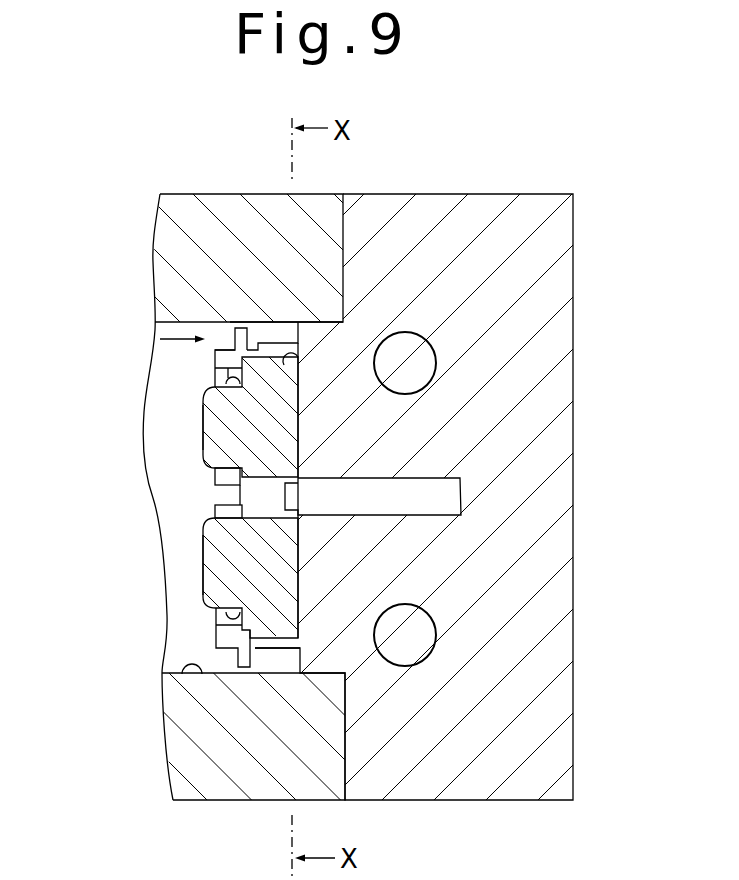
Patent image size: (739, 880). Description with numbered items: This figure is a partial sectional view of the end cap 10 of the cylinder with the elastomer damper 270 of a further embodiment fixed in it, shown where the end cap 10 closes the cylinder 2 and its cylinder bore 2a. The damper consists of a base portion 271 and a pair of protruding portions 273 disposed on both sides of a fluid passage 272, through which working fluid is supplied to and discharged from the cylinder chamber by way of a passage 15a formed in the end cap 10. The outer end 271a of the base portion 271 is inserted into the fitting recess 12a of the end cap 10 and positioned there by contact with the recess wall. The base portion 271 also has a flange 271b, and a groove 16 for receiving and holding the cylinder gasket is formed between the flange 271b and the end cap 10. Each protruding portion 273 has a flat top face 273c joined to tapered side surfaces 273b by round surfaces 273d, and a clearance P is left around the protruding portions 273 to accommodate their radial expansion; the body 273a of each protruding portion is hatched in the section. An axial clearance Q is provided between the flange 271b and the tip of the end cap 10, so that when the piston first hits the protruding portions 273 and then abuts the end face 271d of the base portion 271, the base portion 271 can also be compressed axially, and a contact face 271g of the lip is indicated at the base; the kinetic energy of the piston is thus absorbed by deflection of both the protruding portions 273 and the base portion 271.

The housing 2 is at (160, 266).
The cylinder bore 2a is at (178, 702).
The end cap 10 is at (548, 336).
The fitting recess 12a is at (296, 356).
The passage 15a is at (437, 513).
The groove 16 is at (262, 318).
The elastomer damper 270 is at (165, 339).
The base portion 271 is at (304, 368).
The outer end 271a is at (283, 443).
The flange 271b is at (242, 328).
The end face 271d is at (213, 637).
The seal contact face 271g is at (227, 353).
The fluid passage 272 is at (250, 493).
The protruding portions 273 is at (192, 420).
The back-up ring body 273a is at (253, 590).
The tapered side surfaces 273b is at (215, 507).
The top faces 273c is at (192, 573).
The round surfaces 273d is at (215, 518).
The clearance P is at (203, 378).
The axial clearance Q is at (257, 662).